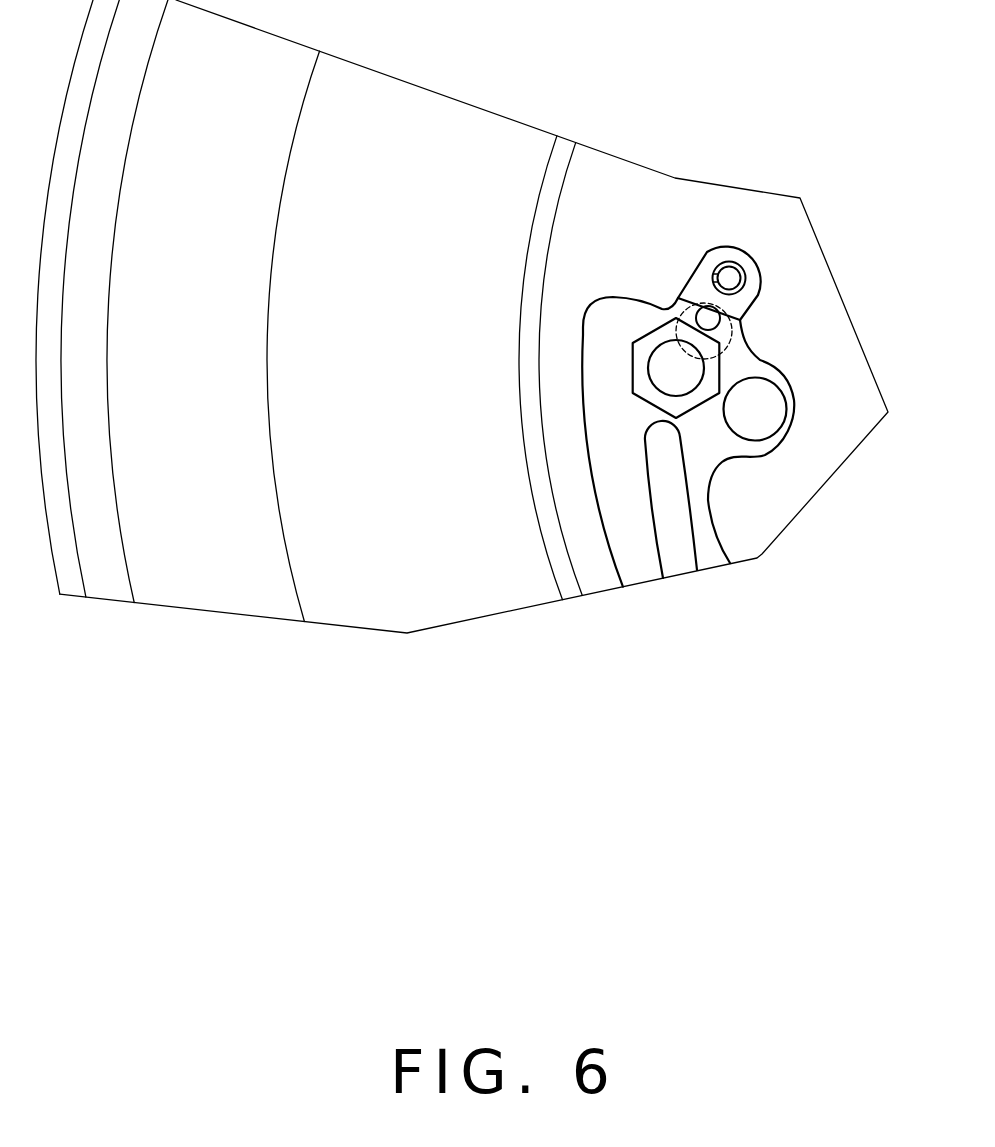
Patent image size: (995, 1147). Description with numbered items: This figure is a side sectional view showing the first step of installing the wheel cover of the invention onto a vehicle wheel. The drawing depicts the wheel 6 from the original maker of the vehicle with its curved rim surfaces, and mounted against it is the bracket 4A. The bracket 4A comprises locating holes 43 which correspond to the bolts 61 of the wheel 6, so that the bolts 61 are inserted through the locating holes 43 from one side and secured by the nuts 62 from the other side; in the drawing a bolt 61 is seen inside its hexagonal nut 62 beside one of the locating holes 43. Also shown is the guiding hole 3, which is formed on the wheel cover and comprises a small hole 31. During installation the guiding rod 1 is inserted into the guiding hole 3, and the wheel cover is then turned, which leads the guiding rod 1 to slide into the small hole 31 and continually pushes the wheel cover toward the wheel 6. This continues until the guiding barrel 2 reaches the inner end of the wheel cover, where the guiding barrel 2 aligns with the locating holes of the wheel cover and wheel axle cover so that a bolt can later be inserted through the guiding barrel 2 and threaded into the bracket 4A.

The guiding rod 1 is at (709, 317).
The guiding barrel 2 is at (740, 267).
The guiding hole 3 is at (684, 307).
The small hole 31 is at (714, 311).
The locating holes 43 is at (745, 417).
The bracket 4A is at (715, 550).
The wheel 6 is at (467, 602).
The bolts 61 is at (672, 352).
The nuts 62 is at (652, 327).